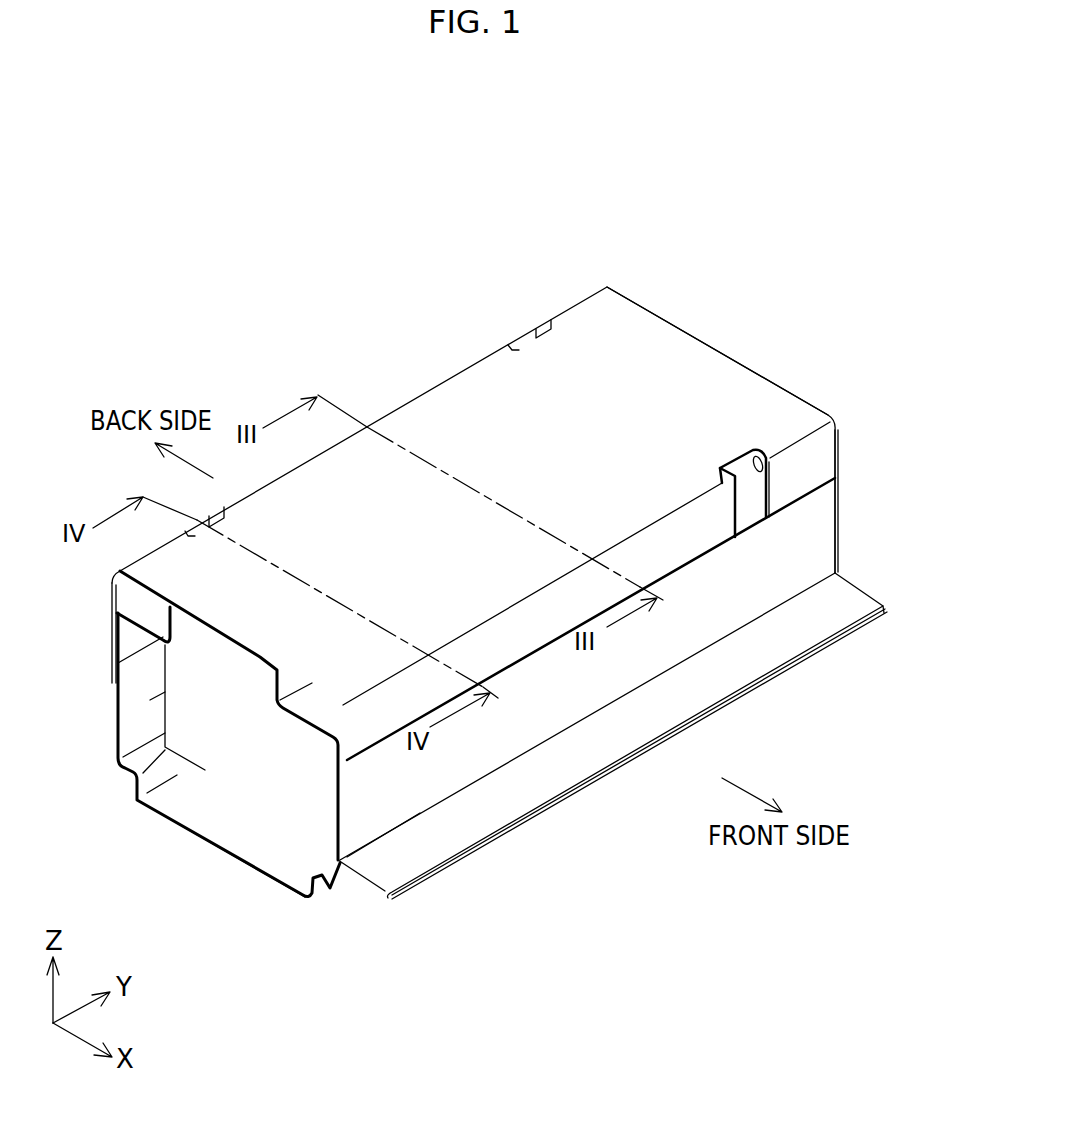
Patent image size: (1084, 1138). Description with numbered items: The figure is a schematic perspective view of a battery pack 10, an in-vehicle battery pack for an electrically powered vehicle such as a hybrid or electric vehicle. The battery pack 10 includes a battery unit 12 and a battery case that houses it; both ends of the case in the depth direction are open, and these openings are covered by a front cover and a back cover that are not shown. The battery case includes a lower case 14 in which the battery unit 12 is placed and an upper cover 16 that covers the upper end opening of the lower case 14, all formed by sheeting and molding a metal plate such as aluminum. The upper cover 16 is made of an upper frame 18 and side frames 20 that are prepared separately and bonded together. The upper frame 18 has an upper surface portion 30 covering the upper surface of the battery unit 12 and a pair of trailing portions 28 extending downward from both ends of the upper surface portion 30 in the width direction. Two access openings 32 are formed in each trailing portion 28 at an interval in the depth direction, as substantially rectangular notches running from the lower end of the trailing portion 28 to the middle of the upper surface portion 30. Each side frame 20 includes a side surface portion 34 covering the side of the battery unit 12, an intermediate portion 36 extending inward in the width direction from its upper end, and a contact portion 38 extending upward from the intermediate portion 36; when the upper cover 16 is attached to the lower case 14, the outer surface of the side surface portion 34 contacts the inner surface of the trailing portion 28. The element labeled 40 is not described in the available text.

The battery pack 10 is at (478, 238).
The battery unit 12 is at (230, 760).
The lower case 14 is at (272, 858).
The upper cover 16 is at (913, 447).
The upper frame 18 is at (822, 458).
The side frame 20 is at (826, 505).
The trailing portion 28 is at (675, 546).
The upper surface portion 30 is at (697, 366).
The access opening 32 is at (757, 443).
The side surface portion 34 is at (560, 700).
The intermediate portion 36 is at (153, 613).
The contact portion 38 is at (187, 630).
The flange 40 is at (828, 616).